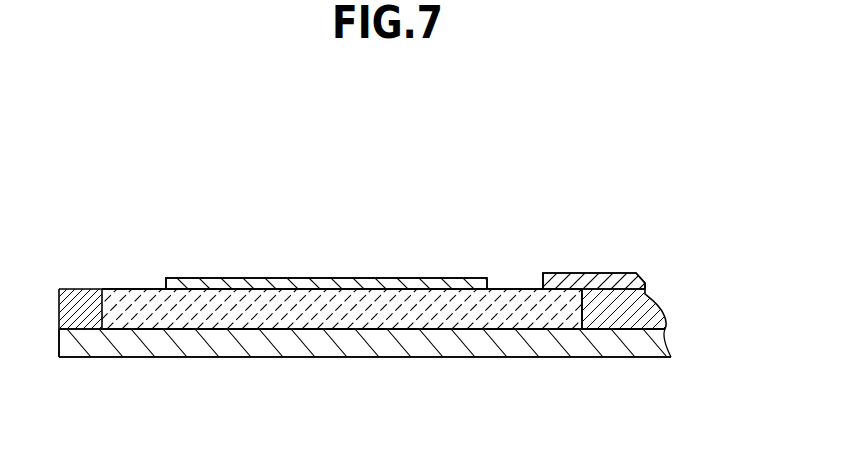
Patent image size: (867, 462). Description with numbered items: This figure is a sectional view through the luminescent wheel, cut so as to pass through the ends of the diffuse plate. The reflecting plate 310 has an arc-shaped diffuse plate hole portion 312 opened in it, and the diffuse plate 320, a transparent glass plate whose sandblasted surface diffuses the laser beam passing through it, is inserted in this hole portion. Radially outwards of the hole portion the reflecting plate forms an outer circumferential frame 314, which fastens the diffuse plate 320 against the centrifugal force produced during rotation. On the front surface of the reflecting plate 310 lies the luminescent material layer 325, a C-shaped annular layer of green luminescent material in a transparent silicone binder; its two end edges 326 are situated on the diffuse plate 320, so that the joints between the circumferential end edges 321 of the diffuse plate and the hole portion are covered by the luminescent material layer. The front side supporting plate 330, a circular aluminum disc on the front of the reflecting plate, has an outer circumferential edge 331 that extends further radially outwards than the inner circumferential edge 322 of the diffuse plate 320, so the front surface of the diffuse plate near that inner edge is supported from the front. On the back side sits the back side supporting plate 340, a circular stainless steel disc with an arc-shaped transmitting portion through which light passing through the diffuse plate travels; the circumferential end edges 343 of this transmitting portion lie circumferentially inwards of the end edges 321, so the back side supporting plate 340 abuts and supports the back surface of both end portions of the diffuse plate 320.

The reflecting plate 310 is at (618, 312).
The diffuse plate hole portion 312 is at (341, 248).
The outer circumferential frame 314 is at (83, 303).
The diffuse plate 320 is at (156, 313).
The circumferential end edges of the diffuse plate 321 is at (239, 313).
The inner circumferential edge of the diffuse plate 322 is at (588, 319).
The luminescent material layer 325 is at (333, 278).
The end edges of the luminescent material layer 326 is at (326, 228).
The front side supporting plate 330 is at (586, 283).
The outer circumferential edge of the front side supporting plate 331 is at (540, 285).
The back side supporting plate 340 is at (625, 340).
The circumferential end edges of the transmitting portion 343 is at (192, 345).